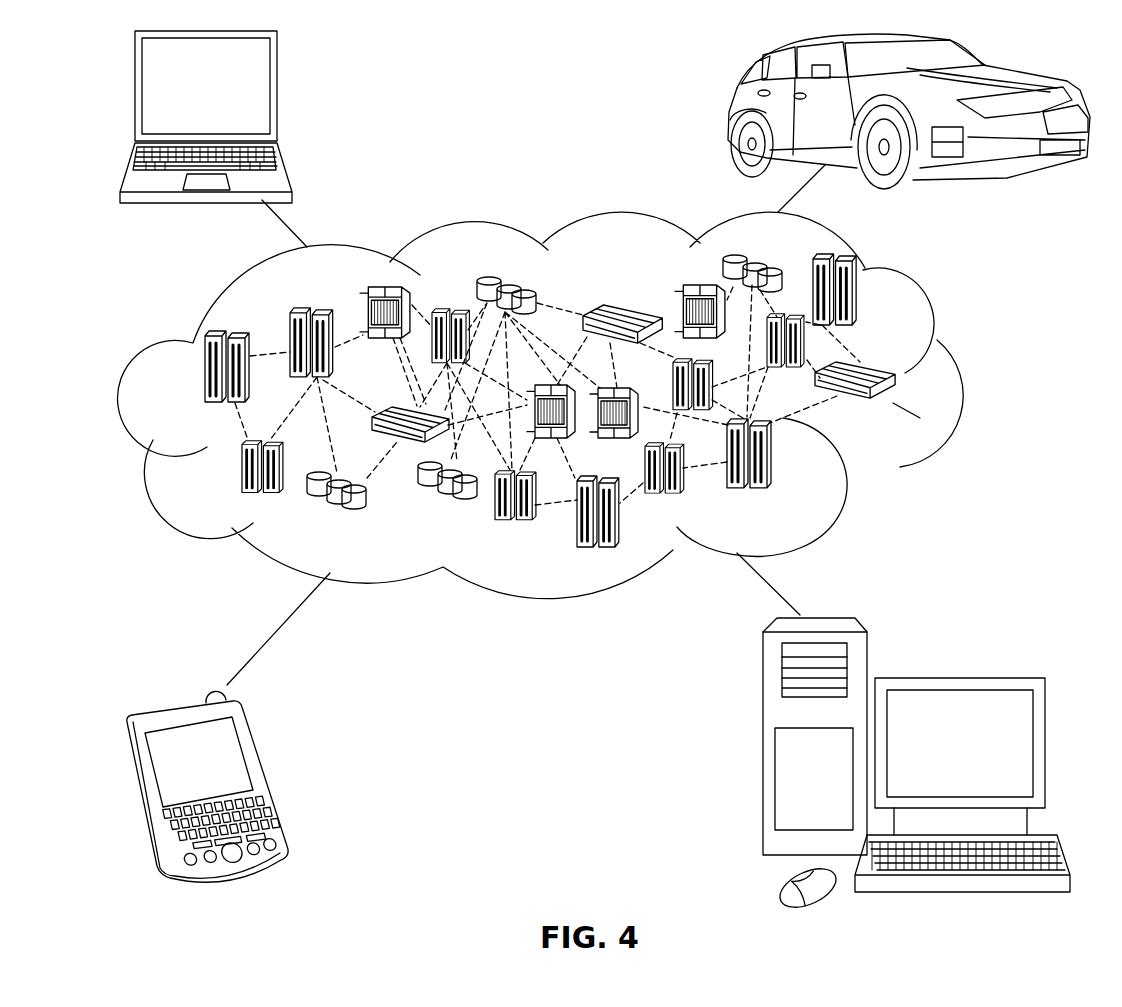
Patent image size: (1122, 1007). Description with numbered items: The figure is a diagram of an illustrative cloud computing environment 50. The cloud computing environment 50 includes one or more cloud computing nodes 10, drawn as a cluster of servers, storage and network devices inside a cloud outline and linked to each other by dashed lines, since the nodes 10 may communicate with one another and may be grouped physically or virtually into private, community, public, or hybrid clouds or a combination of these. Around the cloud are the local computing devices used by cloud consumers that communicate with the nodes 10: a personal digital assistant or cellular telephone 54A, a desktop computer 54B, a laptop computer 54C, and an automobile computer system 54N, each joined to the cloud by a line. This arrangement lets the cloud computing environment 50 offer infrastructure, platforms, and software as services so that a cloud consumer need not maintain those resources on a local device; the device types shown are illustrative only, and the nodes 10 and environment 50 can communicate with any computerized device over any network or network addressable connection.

The cloud computing environment 50 is at (957, 378).
The cloud computing node 10 is at (897, 408).
The personal digital assistant or cellular telephone 54A is at (267, 773).
The desktop computer 54B is at (957, 677).
The laptop computer 54C is at (277, 92).
The automobile computer system 54N is at (728, 110).